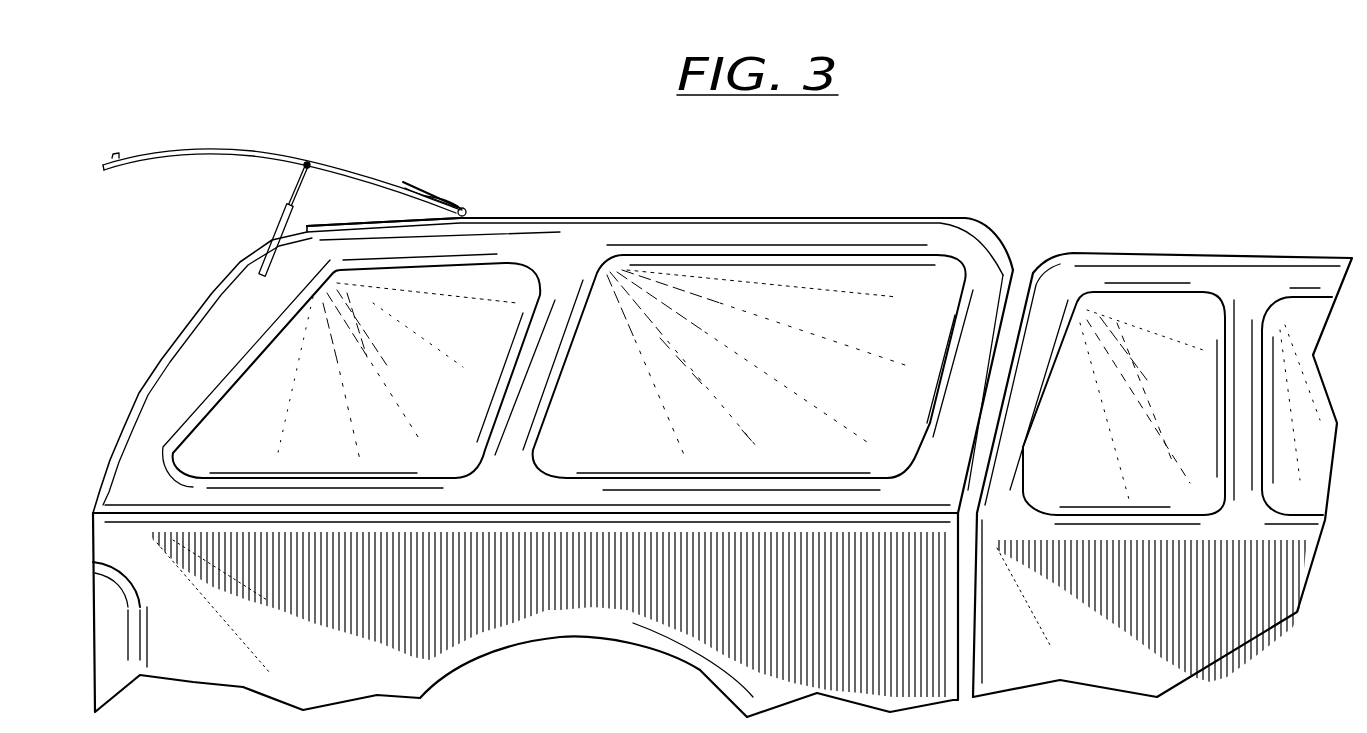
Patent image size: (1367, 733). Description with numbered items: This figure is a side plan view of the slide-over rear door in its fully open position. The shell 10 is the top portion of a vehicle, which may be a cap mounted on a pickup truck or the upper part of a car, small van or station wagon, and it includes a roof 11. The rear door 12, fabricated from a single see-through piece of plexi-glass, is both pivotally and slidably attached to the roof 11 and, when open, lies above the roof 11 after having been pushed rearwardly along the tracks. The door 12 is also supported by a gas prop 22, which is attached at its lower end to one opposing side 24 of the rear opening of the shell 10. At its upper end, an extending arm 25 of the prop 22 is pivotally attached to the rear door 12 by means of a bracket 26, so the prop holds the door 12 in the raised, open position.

The shell 10 is at (767, 198).
The roof 11 is at (645, 213).
The rear door 12 is at (217, 150).
The gas prop 22 is at (268, 250).
The opposing side 24 is at (207, 337).
The extending arm 25 is at (292, 187).
The bracket 26 is at (338, 172).